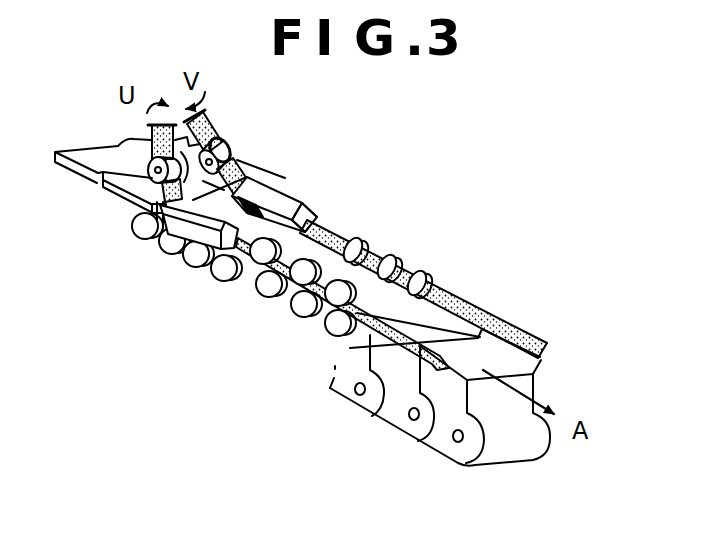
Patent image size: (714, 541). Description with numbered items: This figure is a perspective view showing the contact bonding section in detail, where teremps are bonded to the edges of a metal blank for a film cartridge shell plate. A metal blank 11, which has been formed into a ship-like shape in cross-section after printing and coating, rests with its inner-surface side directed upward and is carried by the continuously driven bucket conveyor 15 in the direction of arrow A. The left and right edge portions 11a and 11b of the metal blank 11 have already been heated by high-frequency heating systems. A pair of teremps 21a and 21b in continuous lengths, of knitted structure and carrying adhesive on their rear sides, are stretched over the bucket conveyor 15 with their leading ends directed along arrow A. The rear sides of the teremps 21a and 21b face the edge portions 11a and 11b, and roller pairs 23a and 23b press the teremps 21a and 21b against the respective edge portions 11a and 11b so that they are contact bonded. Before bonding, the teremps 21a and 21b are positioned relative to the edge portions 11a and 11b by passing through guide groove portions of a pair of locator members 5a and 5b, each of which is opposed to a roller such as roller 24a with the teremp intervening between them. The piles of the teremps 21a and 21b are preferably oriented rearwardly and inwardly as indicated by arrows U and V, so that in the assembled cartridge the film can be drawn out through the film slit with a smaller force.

The metal blank 11 is at (112, 143).
The left edge portion 11a is at (122, 207).
The right edge portion 11b is at (210, 131).
The locator member 5a is at (266, 198).
The locator member 5b is at (290, 203).
The teremp 21a is at (372, 346).
The teremp 21b is at (478, 312).
The roller pair 23a is at (328, 343).
The roller pair 23b is at (442, 266).
The roller 24a is at (220, 289).
The bucket conveyor 15 is at (397, 418).